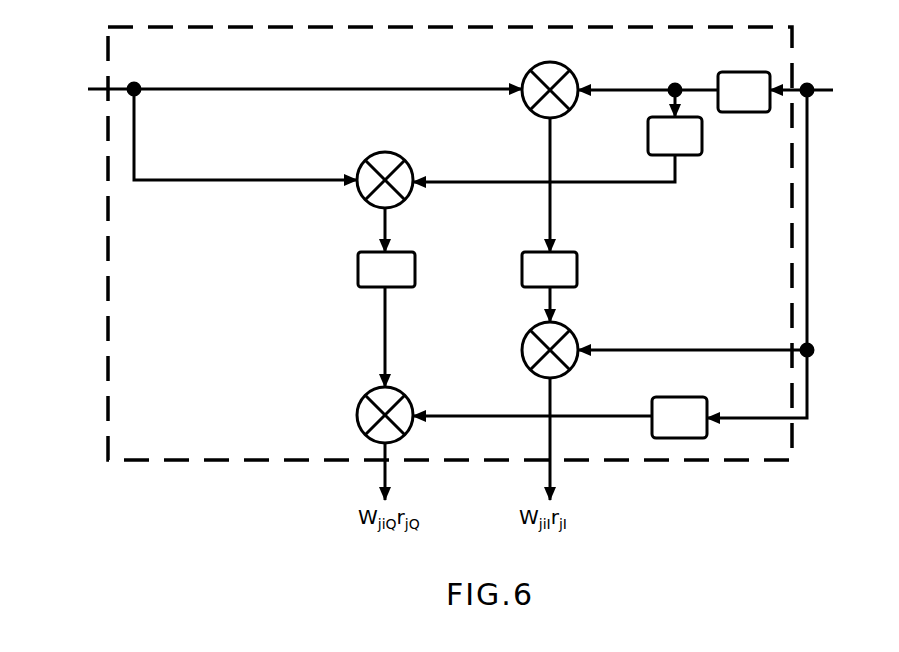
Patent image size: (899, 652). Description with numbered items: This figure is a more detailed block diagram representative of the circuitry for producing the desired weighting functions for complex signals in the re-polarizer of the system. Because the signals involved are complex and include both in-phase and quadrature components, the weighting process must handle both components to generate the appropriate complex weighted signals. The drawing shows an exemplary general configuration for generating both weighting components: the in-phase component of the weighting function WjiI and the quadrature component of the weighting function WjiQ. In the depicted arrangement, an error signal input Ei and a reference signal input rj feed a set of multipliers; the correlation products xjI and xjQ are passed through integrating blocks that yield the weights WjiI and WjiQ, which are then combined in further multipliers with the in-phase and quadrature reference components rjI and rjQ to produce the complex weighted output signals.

The error signal input Ei is at (270, 124).
The in-phase correlation multiplier xjI is at (620, 85).
The quadrature correlation multiplier xjQ is at (516, 172).
The reference signal input with delay tau rj is at (770, 113).
The in-phase component of the weighting function WjiI is at (560, 220).
The quadrature component of the weighting function WjiQ is at (396, 297).
The in-phase weighting multiplier rjI is at (667, 411).
The quadrature weighting multiplier rjQ is at (582, 295).